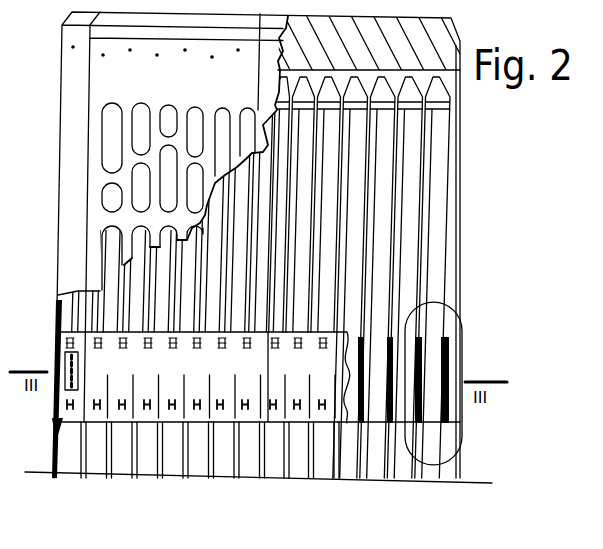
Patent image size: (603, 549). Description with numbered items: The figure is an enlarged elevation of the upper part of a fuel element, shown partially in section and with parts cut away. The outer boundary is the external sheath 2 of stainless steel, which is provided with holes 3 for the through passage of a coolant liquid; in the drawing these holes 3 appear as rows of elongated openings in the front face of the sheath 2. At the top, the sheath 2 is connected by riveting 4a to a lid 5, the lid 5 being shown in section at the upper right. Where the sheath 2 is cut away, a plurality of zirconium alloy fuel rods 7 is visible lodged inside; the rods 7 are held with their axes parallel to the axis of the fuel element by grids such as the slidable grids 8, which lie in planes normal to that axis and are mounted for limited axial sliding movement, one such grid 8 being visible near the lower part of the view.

The external sheath 2 is at (100, 90).
The holes 3 is at (140, 132).
The riveting 4a is at (103, 55).
The lid 5 is at (443, 72).
The fuel rods 7 is at (443, 142).
The slidable grids 8 is at (100, 355).